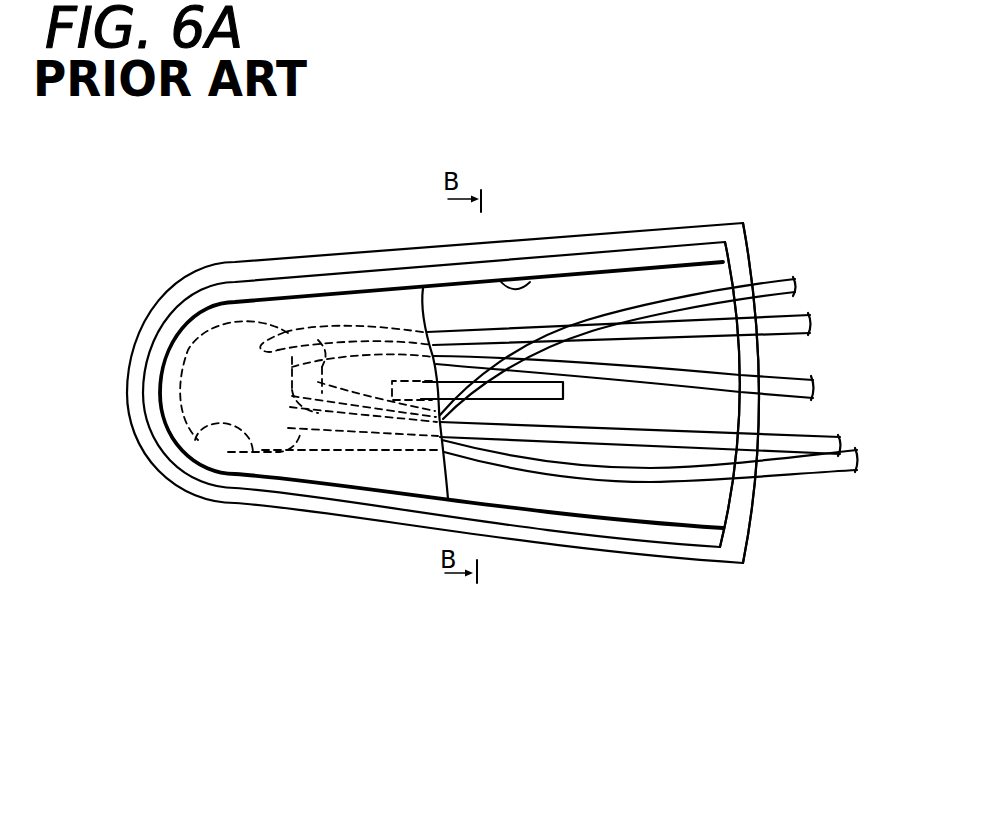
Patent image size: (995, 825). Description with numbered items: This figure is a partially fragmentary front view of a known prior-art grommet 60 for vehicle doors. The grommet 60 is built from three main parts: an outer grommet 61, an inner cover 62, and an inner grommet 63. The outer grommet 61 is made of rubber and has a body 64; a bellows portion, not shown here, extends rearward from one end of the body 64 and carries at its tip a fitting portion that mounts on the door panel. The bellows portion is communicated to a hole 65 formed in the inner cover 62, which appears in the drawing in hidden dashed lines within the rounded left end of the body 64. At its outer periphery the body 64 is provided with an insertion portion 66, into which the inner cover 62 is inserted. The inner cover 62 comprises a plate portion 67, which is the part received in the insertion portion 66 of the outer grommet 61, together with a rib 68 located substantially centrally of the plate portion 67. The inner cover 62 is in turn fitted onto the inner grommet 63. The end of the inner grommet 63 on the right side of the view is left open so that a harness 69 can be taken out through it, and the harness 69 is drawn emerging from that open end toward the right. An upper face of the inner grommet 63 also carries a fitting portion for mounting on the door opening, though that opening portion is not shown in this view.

The grommet for vehicle doors 60 is at (765, 190).
The outer grommet 61 is at (245, 263).
The inner cover 62 is at (717, 518).
The inner grommet 63 is at (354, 481).
The body 64 is at (367, 268).
The hole 65 is at (197, 435).
The insertion portion 66 is at (522, 287).
The plate portion 67 is at (700, 410).
The rib 68 is at (563, 392).
The harness 69 is at (763, 286).